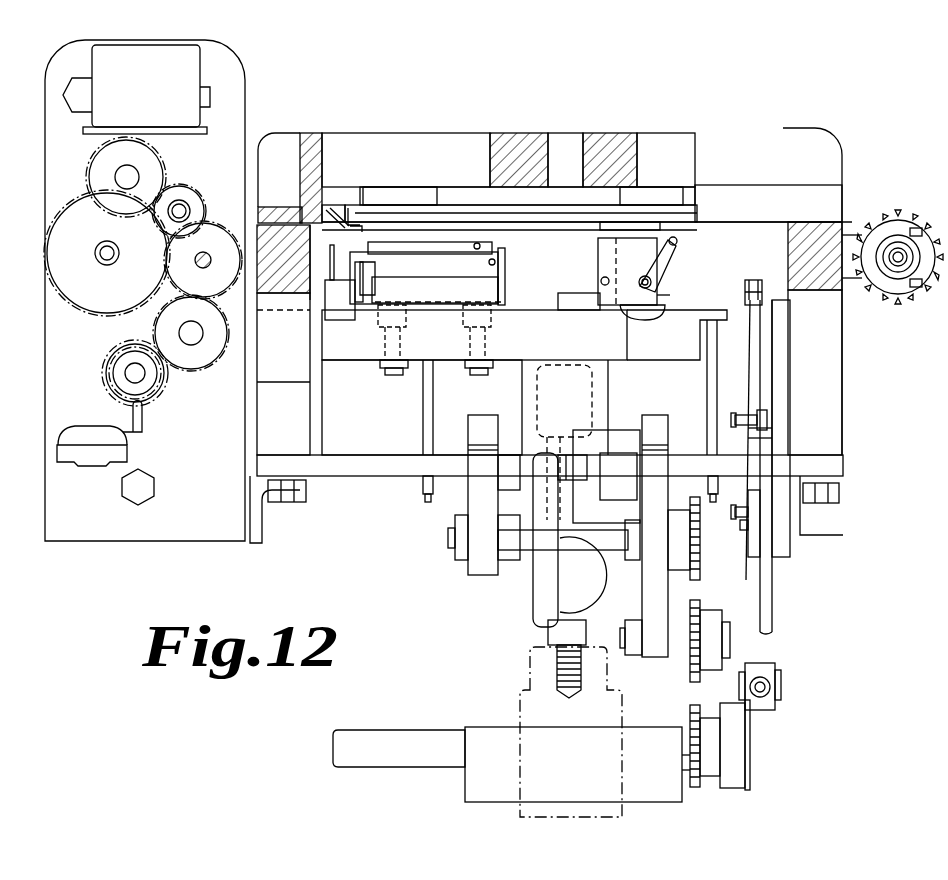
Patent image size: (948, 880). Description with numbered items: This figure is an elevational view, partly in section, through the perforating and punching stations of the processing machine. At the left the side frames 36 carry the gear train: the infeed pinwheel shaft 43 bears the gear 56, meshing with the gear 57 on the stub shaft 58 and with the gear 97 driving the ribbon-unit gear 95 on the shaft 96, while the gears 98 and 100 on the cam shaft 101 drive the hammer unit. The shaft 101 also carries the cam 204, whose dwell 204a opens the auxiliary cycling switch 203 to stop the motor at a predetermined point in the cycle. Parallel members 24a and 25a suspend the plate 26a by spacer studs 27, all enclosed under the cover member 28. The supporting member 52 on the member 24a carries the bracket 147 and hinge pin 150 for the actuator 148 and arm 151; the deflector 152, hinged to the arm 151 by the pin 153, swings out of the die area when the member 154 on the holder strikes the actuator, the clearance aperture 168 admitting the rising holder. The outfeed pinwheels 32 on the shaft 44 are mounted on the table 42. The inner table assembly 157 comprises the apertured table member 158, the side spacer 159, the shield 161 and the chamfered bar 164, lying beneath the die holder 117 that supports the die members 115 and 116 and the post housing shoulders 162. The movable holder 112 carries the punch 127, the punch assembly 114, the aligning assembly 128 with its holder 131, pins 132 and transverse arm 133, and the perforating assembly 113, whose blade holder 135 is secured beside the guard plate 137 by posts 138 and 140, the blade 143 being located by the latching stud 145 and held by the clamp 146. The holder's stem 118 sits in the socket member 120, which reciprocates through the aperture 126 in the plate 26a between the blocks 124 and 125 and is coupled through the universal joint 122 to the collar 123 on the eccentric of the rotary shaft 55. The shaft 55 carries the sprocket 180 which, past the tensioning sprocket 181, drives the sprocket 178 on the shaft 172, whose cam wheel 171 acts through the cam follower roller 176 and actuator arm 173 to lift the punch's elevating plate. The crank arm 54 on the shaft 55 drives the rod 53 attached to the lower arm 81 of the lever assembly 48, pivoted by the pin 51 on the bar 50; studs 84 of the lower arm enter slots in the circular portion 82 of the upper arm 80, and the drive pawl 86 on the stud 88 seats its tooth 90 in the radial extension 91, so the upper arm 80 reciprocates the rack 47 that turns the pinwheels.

The side panel 36 is at (52, 355).
The gear 56 is at (60, 290).
The gear 95 is at (94, 160).
The shaft 96 is at (127, 177).
The gear 97 is at (195, 190).
The gear 43 is at (103, 259).
The gear 57 is at (228, 232).
The shaft 58 is at (210, 268).
The gear 98 is at (206, 366).
The shaft 101 is at (126, 375).
The cam 204a is at (160, 372).
The cam 100 is at (166, 390).
The pin 204 is at (148, 403).
The bracket 203 is at (72, 430).
The housing 28 is at (838, 130).
The top plate 117 is at (696, 165).
The plate 116 is at (720, 193).
The plate 161 is at (401, 210).
The plate 159 is at (636, 212).
The plate 157 is at (720, 210).
The plate 164 is at (624, 222).
The member 152 is at (648, 224).
The support plate 158 is at (690, 226).
The plate 52 is at (810, 183).
The plate 42 is at (845, 220).
The bracket 162 is at (336, 195).
The bracket 115 is at (355, 198).
The frame block 24a is at (803, 290).
The frame column 27 is at (306, 435).
The frame block 25a is at (288, 296).
The member 128 is at (316, 309).
The sprocket 32 is at (903, 218).
The shaft 44 is at (896, 254).
The strip 132 is at (328, 260).
The block 131 is at (338, 312).
The member 113 is at (366, 244).
The plate 143 is at (401, 248).
The housing 137 is at (434, 282).
The bracket 146 is at (368, 282).
The pin 145 is at (489, 263).
The strip 135 is at (506, 273).
The member 133 is at (506, 303).
The block 127 is at (538, 308).
The bolt 138 is at (392, 378).
The bolt 140 is at (478, 378).
The block 112 is at (340, 368).
The block 154 is at (565, 293).
The block 114 is at (632, 271).
The pivot 150 is at (638, 282).
The lever 151 is at (672, 258).
The pin 153 is at (677, 243).
The member 147 is at (670, 296).
The cam follower 148 is at (660, 310).
The block 168 is at (626, 347).
The rod 80 is at (748, 358).
The bracket 47 is at (755, 278).
The rod 81 is at (768, 598).
The bar 50 is at (791, 547).
The plate 86 is at (768, 415).
The bolt 88 is at (742, 416).
The member 90 is at (772, 430).
The member 91 is at (762, 440).
The bracket 82 is at (750, 548).
The bolt 84 is at (738, 517).
The nut 51 is at (742, 530).
The assembly 48 is at (748, 571).
The base bar 26a is at (332, 480).
The member 118 is at (594, 393).
The member 120 is at (610, 402).
The pin 176 is at (548, 455).
The block 173 is at (580, 505).
The arm 125 is at (486, 575).
The hub 126 is at (500, 470).
The arm 171 is at (534, 616).
The shaft 172 is at (612, 550).
The cam 122 is at (606, 594).
The bolt 123 is at (518, 700).
The shaft 55 is at (418, 756).
The arm 124 is at (652, 657).
The sprocket 178 is at (694, 580).
The sprocket 181 is at (694, 684).
The sprocket 180 is at (696, 787).
The disk 54 is at (750, 744).
The bracket 53 is at (772, 705).